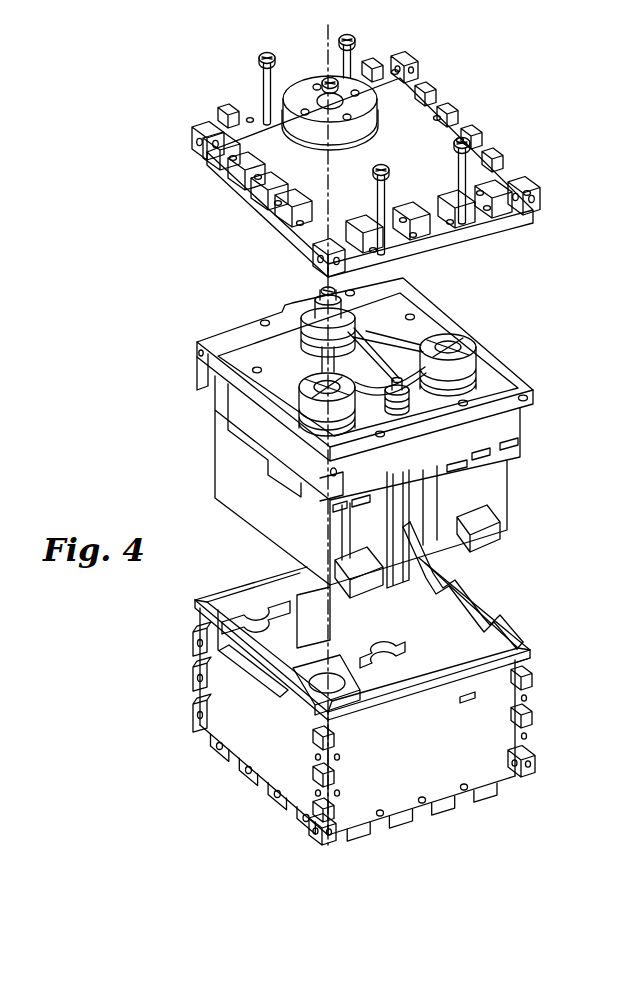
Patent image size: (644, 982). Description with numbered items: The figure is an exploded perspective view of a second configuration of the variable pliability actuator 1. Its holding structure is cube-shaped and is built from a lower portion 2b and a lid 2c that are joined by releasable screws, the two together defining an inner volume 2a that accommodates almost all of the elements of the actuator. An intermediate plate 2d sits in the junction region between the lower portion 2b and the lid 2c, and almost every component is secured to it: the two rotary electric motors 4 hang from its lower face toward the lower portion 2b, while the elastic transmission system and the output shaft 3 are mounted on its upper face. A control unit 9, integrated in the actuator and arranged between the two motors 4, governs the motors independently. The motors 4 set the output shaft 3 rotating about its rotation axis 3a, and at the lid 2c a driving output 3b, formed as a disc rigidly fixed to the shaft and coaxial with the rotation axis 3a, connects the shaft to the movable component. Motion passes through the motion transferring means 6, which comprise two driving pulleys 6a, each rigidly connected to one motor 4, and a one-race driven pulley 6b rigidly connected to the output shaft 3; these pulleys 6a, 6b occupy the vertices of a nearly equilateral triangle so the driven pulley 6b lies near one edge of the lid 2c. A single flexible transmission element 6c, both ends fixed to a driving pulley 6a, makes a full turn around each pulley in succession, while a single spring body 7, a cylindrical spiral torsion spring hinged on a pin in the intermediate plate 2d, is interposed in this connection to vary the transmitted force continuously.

The variable pliability actuator 1 is at (526, 783).
The inner volume 2a is at (438, 633).
The lower portion 2b is at (227, 688).
The lid 2c is at (220, 192).
The intermediate plate 2d is at (488, 377).
The output shaft 3 is at (345, 303).
The rotation axis 3a is at (313, 795).
The driving output 3b is at (280, 113).
The electric motor 4 is at (263, 504).
The motion transferring means 6 is at (367, 344).
The driving pulley 6a is at (465, 340).
The driven pulley 6b is at (312, 316).
The flexible transmission element 6c is at (305, 412).
The spring body 7 is at (415, 396).
The control unit 9 is at (415, 560).